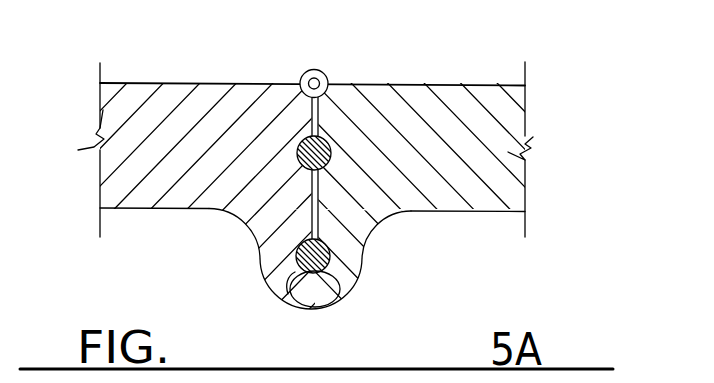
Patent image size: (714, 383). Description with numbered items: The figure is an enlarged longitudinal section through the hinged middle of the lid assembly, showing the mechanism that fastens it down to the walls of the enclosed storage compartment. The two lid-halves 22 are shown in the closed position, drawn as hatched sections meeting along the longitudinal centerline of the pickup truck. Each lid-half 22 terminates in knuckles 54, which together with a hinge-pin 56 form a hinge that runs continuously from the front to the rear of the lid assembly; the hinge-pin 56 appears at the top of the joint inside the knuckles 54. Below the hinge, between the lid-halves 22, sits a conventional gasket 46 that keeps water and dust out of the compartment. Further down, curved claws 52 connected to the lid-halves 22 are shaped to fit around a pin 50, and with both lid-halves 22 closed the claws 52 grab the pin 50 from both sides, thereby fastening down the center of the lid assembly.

The lid-half 22 is at (178, 83).
The gasket 46 is at (298, 140).
The pin 50 is at (332, 262).
The curved claw 52 is at (292, 280).
The knuckle 54 is at (307, 75).
The hinge-pin 56 is at (327, 78).